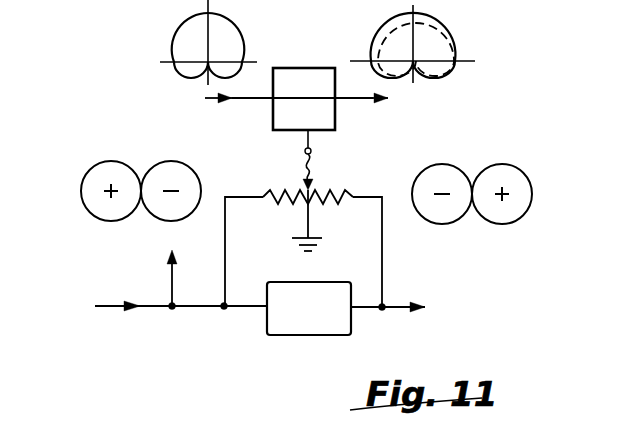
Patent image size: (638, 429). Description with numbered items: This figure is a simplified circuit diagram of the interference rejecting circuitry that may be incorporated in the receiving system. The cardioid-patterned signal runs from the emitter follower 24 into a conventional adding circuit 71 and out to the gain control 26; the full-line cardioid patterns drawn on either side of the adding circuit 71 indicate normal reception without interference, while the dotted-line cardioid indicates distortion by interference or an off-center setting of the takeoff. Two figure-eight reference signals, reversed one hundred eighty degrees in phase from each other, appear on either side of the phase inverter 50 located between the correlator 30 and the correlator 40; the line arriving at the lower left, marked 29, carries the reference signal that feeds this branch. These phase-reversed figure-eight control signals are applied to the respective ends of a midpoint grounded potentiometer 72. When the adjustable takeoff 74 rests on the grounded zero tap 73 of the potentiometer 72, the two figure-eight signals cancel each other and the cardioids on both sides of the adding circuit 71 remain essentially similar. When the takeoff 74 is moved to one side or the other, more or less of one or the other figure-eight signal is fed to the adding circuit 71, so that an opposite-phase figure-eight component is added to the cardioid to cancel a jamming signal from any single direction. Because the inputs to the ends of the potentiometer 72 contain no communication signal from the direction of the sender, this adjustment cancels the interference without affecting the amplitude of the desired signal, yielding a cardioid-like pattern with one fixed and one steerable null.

The emitter follower 24 is at (217, 100).
The gain control 26 is at (360, 103).
The adding circuit 71 is at (322, 57).
The midpoint grounded potentiometer 72 is at (332, 197).
The zero tap 73 is at (302, 208).
The adjustable takeoff 74 is at (247, 234).
The control input line 29 is at (112, 308).
The correlator 30 is at (170, 280).
The phase inverter 50 is at (312, 337).
The correlator 40 is at (402, 325).